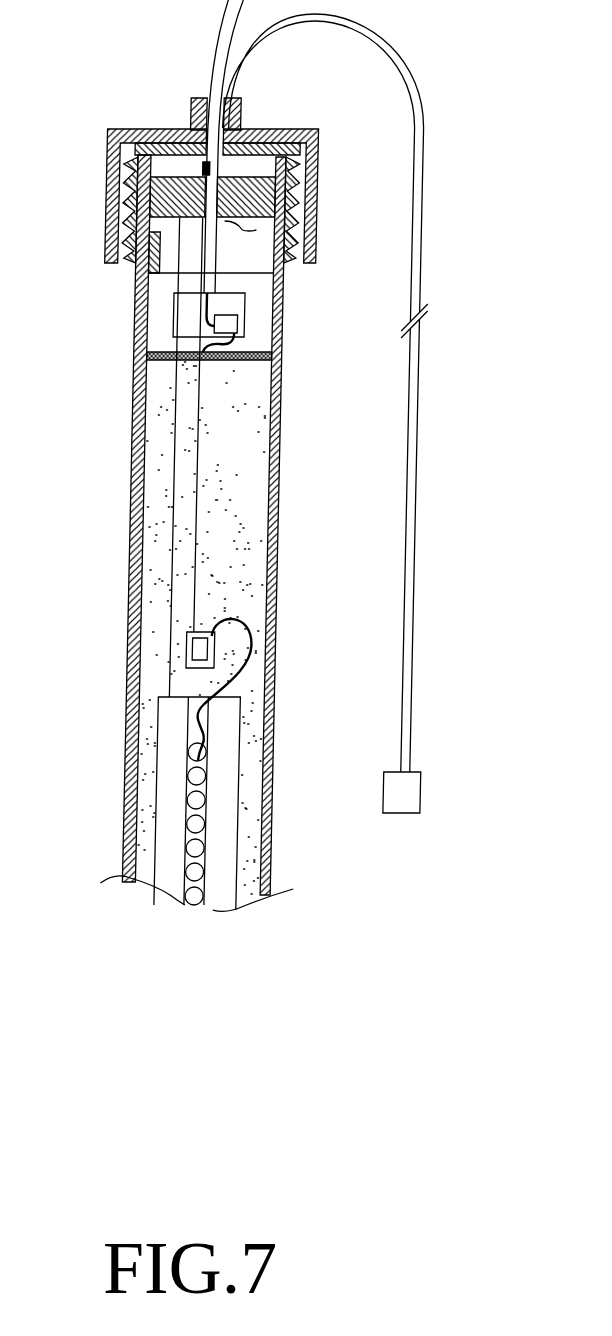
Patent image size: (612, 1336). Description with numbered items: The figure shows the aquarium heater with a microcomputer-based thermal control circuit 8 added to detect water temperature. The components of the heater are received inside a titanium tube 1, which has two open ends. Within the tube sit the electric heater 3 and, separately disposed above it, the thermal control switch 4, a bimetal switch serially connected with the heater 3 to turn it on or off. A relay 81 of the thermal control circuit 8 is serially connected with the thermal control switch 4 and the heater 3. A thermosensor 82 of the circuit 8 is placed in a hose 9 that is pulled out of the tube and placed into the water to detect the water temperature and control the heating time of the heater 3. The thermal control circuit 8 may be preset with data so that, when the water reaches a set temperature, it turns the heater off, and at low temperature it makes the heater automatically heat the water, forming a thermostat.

The titanium tube 1 is at (141, 420).
The electric heater 3 is at (167, 742).
The thermal control switch 4 is at (225, 650).
The thermal control circuit 8 is at (248, 303).
The relay 81 is at (241, 323).
The hose 9 is at (423, 423).
The thermosensor 82 is at (434, 786).